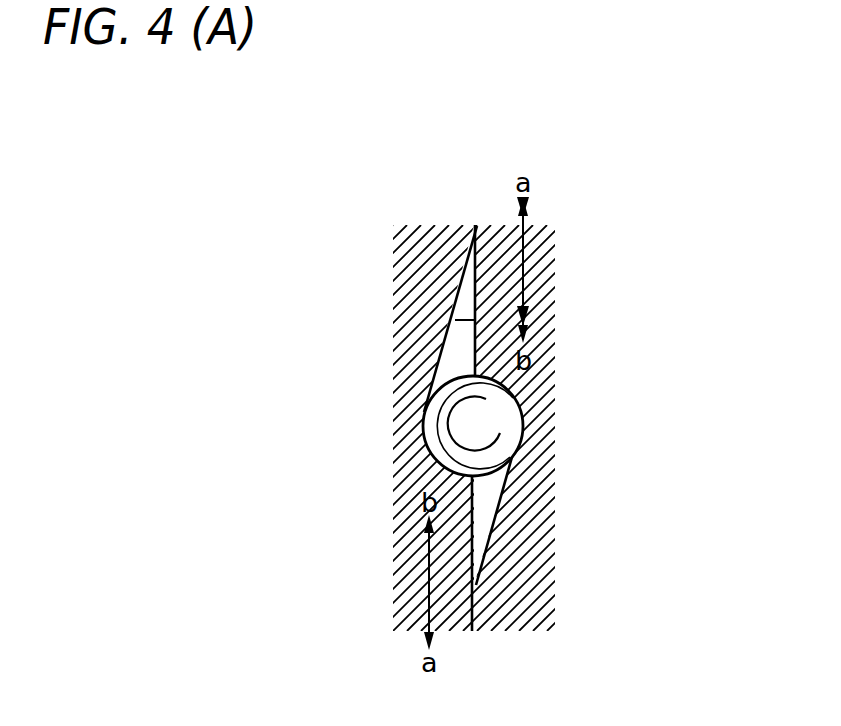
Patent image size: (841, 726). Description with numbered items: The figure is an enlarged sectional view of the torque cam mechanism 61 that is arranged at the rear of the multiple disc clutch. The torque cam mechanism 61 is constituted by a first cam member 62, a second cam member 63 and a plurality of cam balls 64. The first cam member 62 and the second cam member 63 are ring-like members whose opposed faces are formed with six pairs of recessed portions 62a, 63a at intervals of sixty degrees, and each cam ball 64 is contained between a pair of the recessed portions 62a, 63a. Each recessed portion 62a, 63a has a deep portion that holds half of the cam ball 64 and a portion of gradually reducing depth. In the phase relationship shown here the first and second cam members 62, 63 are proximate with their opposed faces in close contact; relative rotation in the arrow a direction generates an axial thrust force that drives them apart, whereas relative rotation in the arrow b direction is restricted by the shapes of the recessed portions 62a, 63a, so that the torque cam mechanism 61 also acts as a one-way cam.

The torque cam mechanism 61 is at (420, 428).
The first cam member 62 is at (556, 358).
The recessed portion 62a is at (495, 509).
The second cam member 63 is at (383, 357).
The recessed portion 63a is at (484, 306).
The cam ball 64 is at (453, 415).